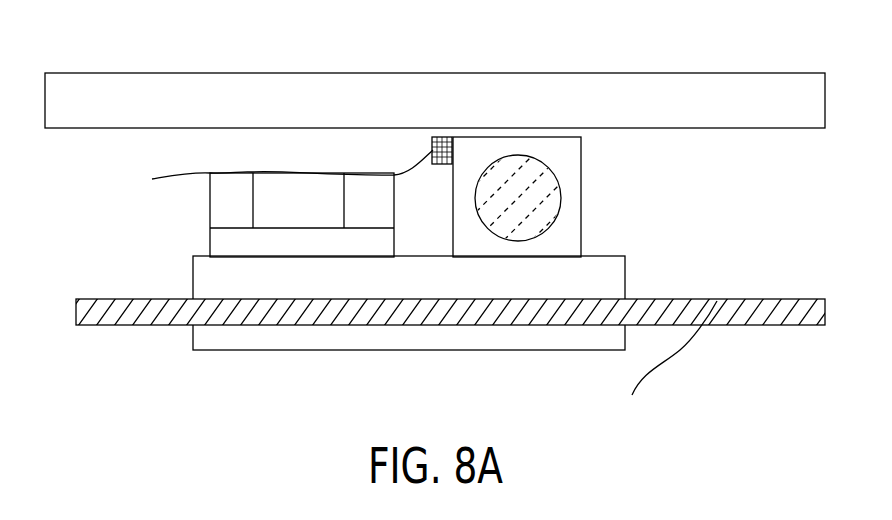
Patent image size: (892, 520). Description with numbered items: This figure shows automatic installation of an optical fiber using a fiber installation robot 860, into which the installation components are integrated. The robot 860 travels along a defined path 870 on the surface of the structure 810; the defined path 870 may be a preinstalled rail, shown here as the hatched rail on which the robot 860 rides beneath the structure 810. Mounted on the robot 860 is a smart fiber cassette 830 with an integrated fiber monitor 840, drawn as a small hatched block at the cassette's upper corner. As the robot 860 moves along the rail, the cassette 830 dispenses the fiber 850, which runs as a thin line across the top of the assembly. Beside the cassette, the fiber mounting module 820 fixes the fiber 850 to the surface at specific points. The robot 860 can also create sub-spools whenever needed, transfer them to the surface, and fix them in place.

The structure 810 is at (285, 87).
The fiber mounting module 820 is at (223, 202).
The smart fiber cassette 830 is at (582, 160).
The fiber monitor 840 is at (446, 165).
The fiber 850 is at (283, 172).
The fiber installation robot 860 is at (612, 273).
The defined path 870 is at (745, 299).